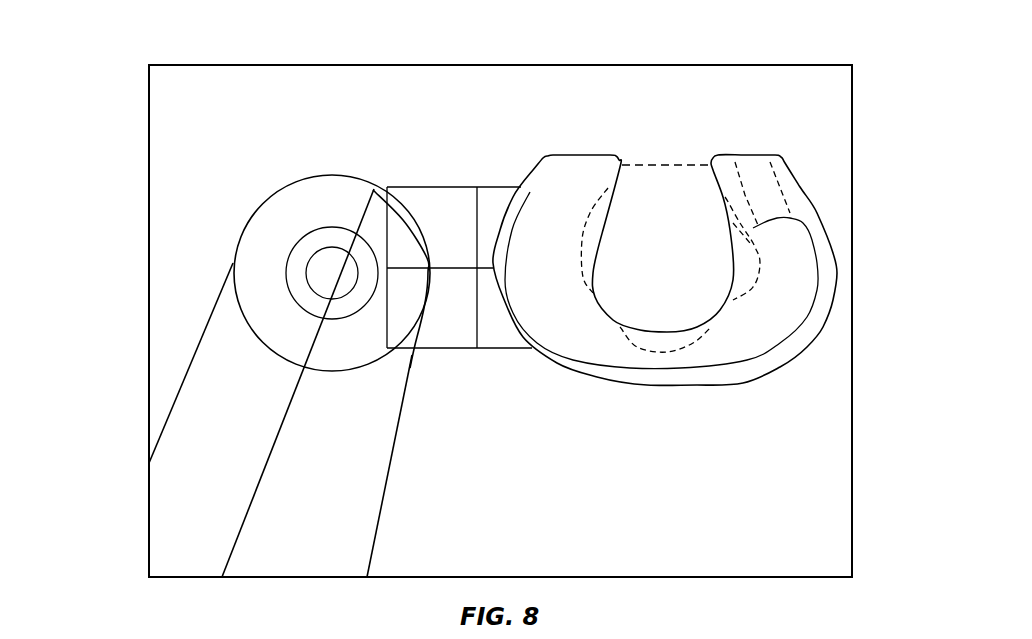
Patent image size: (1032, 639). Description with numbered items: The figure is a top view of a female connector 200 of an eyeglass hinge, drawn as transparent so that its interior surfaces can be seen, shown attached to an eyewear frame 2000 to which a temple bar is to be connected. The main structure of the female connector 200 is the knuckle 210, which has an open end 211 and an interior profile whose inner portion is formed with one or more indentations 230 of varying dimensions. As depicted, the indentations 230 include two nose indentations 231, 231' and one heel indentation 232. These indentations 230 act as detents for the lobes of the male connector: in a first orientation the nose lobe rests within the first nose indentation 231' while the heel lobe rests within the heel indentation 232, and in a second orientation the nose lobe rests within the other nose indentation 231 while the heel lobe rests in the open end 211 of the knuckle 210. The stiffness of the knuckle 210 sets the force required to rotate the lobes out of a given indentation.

The female connector 200 is at (822, 180).
The knuckle 210 is at (563, 173).
The open end 211 is at (666, 147).
The indentations 230 is at (578, 225).
The nose indentation 231 is at (665, 290).
The first nose indentation 231' is at (772, 321).
The heel indentation 232 is at (587, 253).
The eyewear frame 2000 is at (182, 497).